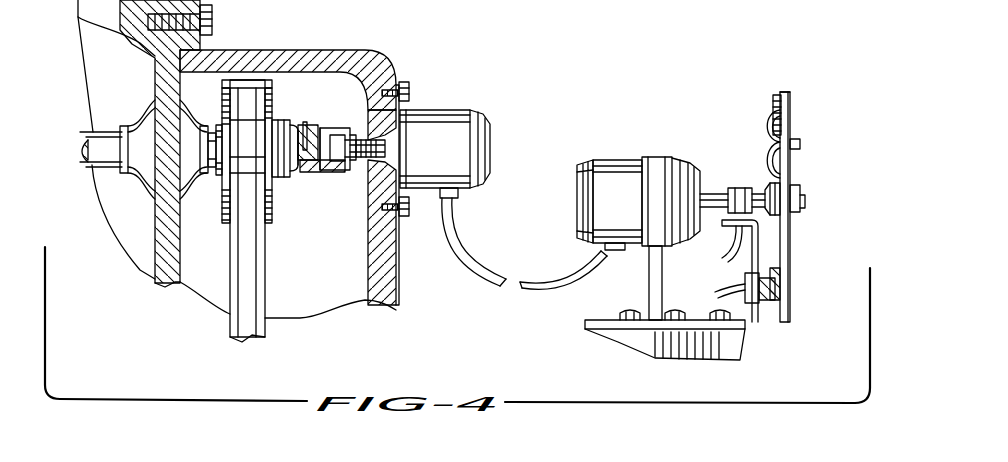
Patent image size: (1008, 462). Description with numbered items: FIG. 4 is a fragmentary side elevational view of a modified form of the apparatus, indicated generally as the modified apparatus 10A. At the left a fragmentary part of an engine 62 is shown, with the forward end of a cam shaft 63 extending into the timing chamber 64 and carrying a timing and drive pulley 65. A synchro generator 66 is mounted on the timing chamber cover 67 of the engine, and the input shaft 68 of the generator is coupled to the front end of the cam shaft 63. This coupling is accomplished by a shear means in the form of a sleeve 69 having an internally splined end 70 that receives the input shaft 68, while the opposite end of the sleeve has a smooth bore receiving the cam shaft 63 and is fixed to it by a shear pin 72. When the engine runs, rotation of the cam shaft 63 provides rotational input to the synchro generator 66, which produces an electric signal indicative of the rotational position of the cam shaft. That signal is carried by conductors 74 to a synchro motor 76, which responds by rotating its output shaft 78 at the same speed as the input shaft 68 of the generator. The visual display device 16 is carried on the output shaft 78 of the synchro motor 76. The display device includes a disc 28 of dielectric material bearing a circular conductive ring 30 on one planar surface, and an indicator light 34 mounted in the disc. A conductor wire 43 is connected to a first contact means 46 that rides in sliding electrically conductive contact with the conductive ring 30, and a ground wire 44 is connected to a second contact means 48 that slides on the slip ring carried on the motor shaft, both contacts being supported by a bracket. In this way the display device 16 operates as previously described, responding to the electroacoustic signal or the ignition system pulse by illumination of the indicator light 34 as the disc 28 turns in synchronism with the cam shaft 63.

The modified apparatus 10A is at (575, 86).
The visual display device 16 is at (796, 112).
The disc 28 is at (790, 240).
The circular ring 30 is at (773, 103).
The indicator light 34 is at (800, 144).
The conductor wire 43 is at (715, 293).
The ground wire 44 is at (722, 258).
The first contact means 46 is at (768, 300).
The second contact means 48 is at (742, 188).
The engine 62 is at (165, 265).
The cam shaft 63 is at (100, 165).
The timing chamber 64 is at (328, 288).
The timing and drive pulley 65 is at (272, 205).
The synchro generator 66 is at (452, 108).
The timing chamber cover 67 is at (399, 262).
The input shaft 68 is at (340, 172).
The sleeve 69 is at (332, 128).
The internally splined end 70 is at (356, 170).
The shear pin 72 is at (305, 122).
The conductors 74 is at (503, 286).
The synchro motor 76 is at (674, 158).
The output shaft 78 is at (712, 194).